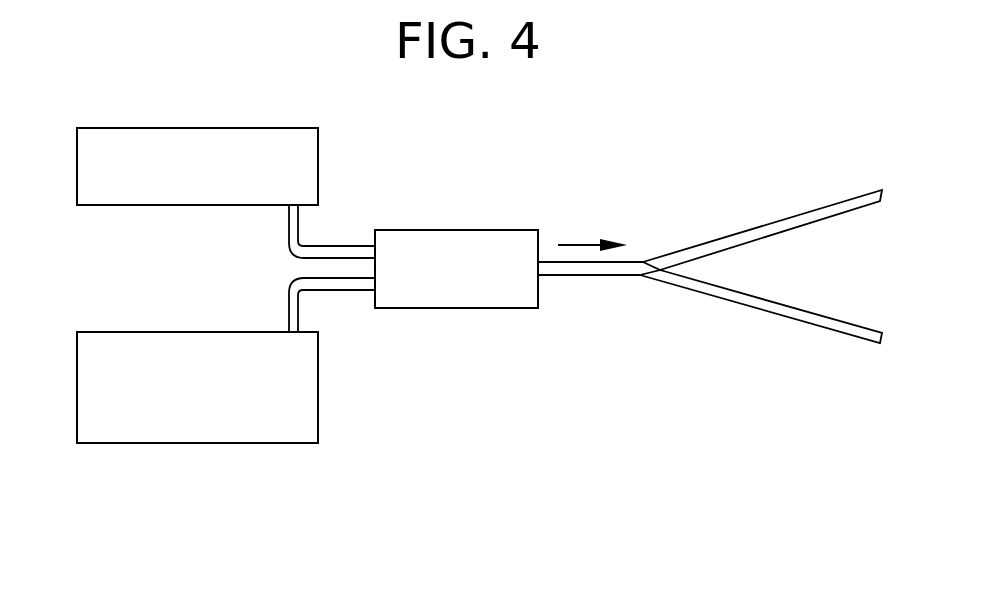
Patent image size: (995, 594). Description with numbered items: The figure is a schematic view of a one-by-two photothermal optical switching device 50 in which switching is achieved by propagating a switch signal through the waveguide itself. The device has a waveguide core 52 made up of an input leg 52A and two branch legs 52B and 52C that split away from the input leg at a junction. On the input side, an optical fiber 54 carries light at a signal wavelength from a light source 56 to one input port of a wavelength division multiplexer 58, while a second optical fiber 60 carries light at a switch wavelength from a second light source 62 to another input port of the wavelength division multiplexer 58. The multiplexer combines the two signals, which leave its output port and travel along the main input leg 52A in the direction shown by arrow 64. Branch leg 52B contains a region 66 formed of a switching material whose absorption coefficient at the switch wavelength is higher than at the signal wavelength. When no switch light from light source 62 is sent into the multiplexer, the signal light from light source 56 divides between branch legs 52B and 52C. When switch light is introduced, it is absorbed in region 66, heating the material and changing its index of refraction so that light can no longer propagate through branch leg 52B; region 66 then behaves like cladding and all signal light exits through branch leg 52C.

The optical switching device 50 is at (810, 185).
The waveguide core 52 is at (697, 307).
The input leg 52A is at (571, 277).
The branch leg 52B is at (842, 215).
The branch leg 52C is at (643, 277).
The optical fiber 54 is at (300, 226).
The light source 56 is at (170, 128).
The wavelength division multiplexer 58 is at (470, 230).
The optical fiber 60 is at (288, 312).
The light source 62 is at (208, 443).
The arrow 64 is at (582, 245).
The region 66 is at (672, 252).